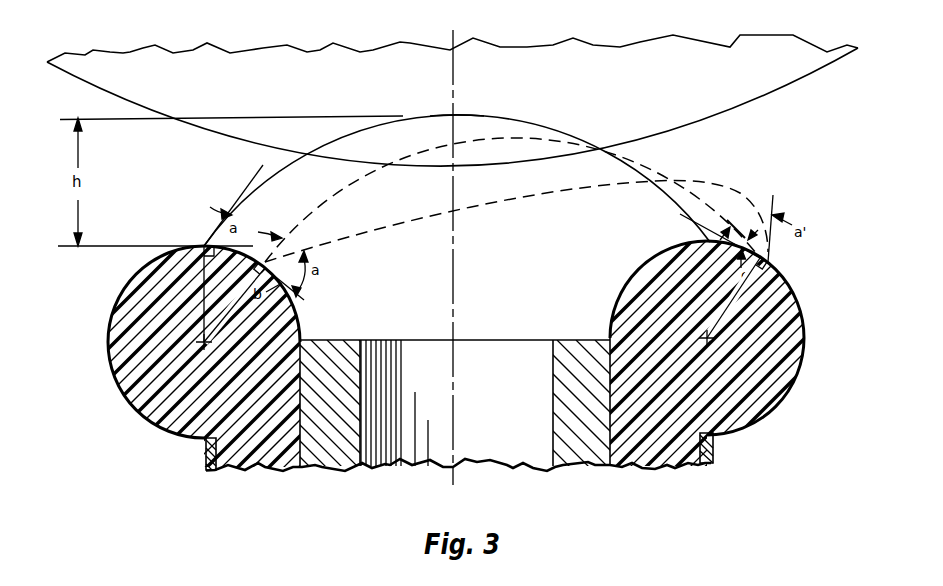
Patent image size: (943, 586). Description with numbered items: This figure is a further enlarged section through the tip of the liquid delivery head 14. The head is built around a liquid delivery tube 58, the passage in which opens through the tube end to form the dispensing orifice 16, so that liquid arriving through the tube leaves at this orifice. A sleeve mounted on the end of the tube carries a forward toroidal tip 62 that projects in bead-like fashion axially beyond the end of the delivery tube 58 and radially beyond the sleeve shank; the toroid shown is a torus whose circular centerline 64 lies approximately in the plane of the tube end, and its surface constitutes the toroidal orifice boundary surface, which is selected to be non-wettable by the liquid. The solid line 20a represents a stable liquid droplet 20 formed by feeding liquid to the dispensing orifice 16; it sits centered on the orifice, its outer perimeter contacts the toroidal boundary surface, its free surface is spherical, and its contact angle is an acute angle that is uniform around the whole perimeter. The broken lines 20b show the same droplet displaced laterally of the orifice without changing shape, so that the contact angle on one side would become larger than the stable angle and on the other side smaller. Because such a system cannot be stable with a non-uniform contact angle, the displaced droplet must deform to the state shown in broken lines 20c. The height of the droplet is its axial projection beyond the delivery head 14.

The liquid delivery head 14 is at (195, 458).
The dispensing orifice 16 is at (553, 385).
The liquid droplet 20 is at (546, 114).
The centered droplet position 20a is at (425, 116).
The offset droplet position 20b is at (350, 185).
The deformed droplet state 20c is at (412, 224).
The liquid delivery tube 58 is at (340, 481).
The toroidal tip 62 is at (110, 390).
The circular centerline 64 is at (710, 338).